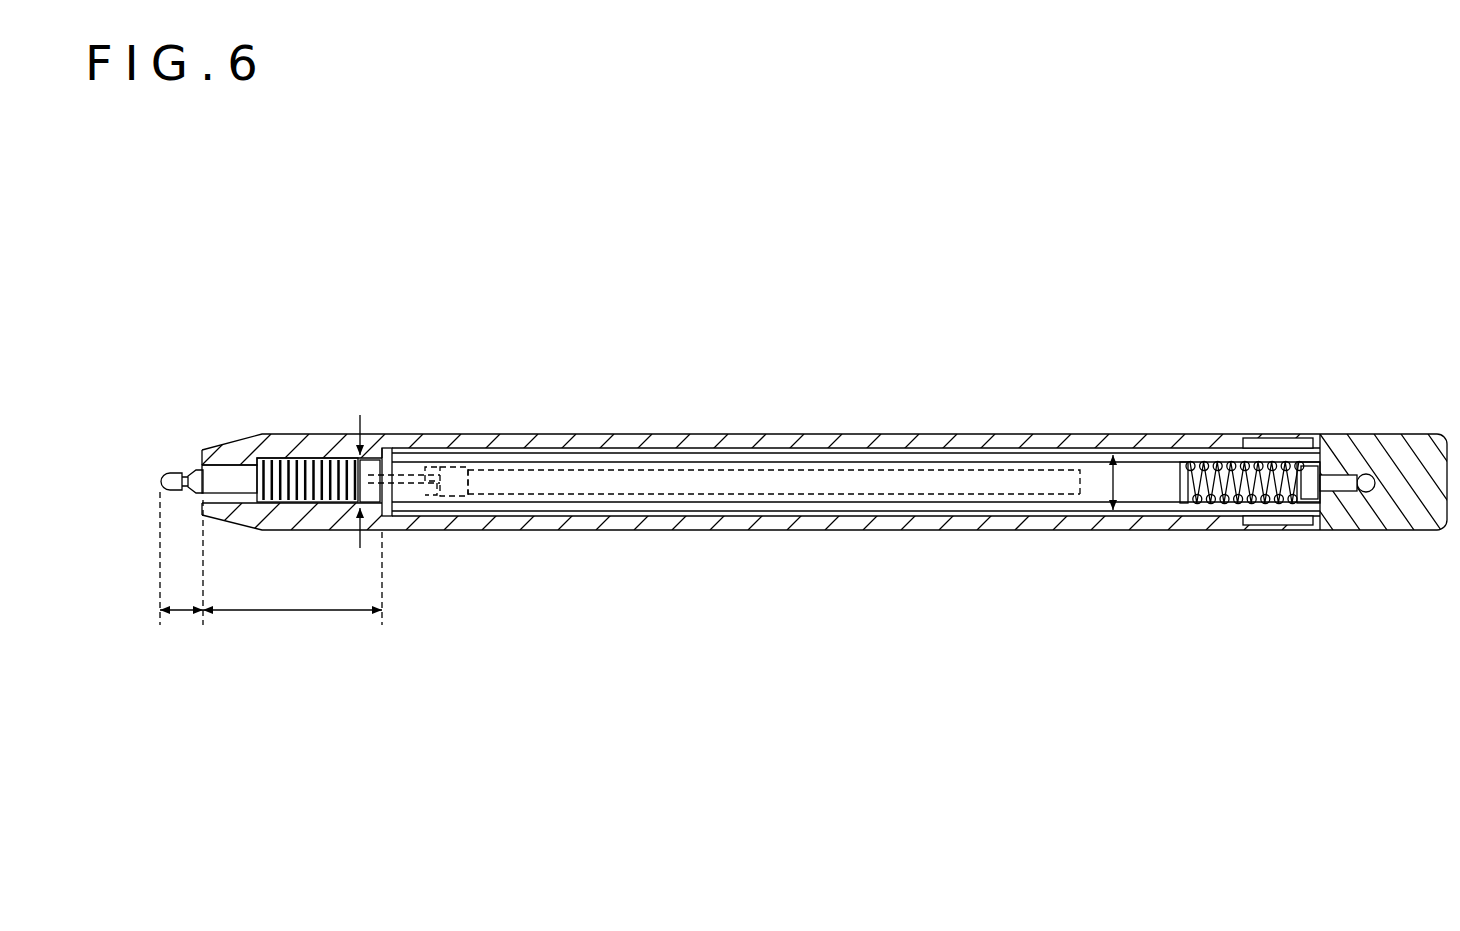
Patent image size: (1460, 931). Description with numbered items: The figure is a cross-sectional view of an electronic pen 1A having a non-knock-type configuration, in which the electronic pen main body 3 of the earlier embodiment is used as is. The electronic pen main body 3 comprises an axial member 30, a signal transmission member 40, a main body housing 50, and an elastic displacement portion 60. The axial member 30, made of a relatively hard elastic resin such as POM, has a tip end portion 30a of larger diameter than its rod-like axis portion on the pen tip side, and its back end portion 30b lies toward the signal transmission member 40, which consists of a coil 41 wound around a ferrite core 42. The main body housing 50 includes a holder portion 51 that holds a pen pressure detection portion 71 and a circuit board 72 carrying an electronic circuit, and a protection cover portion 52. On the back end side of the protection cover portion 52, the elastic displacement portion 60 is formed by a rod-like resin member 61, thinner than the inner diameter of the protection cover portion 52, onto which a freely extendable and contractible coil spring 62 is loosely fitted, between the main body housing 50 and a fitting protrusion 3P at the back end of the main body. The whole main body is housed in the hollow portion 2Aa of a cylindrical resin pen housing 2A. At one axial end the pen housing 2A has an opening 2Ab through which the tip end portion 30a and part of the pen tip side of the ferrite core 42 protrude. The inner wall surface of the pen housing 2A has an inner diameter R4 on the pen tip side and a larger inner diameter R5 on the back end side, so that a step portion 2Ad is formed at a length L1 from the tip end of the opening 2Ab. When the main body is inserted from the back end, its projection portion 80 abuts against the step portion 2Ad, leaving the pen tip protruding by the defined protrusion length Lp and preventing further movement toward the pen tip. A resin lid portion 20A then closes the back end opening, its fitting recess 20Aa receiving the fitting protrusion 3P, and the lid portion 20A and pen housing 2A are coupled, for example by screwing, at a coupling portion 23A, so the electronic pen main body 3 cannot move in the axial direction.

The electronic pen 1A is at (1017, 433).
The pen housing 2A is at (898, 443).
The hollow portion 2Aa is at (805, 457).
The opening 2Ab is at (202, 465).
The step portion 2Ad is at (360, 448).
The electronic pen main body 3 is at (517, 450).
The fitting protrusion 3P is at (1337, 510).
The lid portion 20A is at (1393, 448).
The fitting recess 20Aa is at (1337, 477).
The coupling portion 23A is at (1273, 442).
The axial member 30 is at (183, 468).
The tip end portion 30a is at (159, 478).
The rear end portion of pen tip member 30b is at (428, 468).
The signal transmission member 40 is at (280, 414).
The coil 41 is at (307, 438).
The ferrite core 42 is at (223, 483).
The main body housing 50 is at (756, 550).
The holder portion 51 is at (445, 503).
The protection cover portion 52 is at (774, 524).
The elastic displacement portion 60 is at (1238, 546).
The rod-like member 61 is at (1187, 498).
The coil spring 62 is at (1235, 507).
The pen pressure detection portion 71 is at (445, 467).
The circuit board 72 is at (697, 490).
The projection portion 80 is at (383, 452).
The inner diameter on the pen tip side R4 is at (362, 487).
The inner diameter on the back end side R5 is at (1115, 482).
The protrusion length Lp is at (181, 568).
The length L1 is at (292, 624).